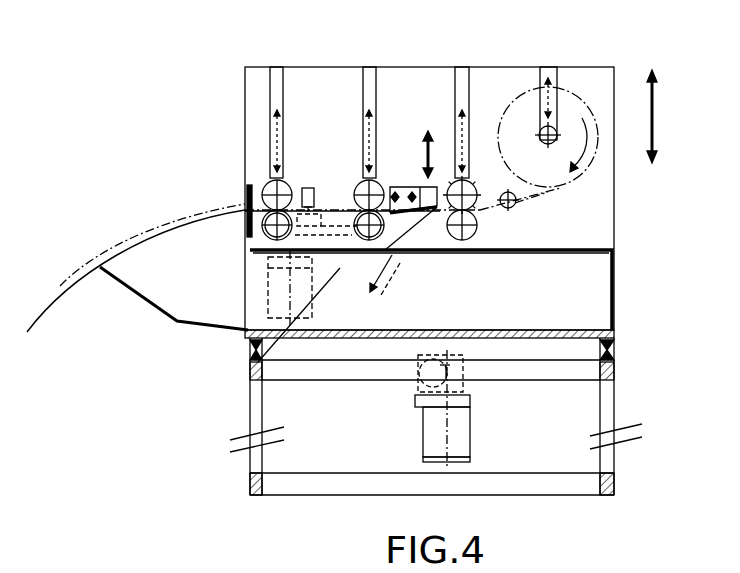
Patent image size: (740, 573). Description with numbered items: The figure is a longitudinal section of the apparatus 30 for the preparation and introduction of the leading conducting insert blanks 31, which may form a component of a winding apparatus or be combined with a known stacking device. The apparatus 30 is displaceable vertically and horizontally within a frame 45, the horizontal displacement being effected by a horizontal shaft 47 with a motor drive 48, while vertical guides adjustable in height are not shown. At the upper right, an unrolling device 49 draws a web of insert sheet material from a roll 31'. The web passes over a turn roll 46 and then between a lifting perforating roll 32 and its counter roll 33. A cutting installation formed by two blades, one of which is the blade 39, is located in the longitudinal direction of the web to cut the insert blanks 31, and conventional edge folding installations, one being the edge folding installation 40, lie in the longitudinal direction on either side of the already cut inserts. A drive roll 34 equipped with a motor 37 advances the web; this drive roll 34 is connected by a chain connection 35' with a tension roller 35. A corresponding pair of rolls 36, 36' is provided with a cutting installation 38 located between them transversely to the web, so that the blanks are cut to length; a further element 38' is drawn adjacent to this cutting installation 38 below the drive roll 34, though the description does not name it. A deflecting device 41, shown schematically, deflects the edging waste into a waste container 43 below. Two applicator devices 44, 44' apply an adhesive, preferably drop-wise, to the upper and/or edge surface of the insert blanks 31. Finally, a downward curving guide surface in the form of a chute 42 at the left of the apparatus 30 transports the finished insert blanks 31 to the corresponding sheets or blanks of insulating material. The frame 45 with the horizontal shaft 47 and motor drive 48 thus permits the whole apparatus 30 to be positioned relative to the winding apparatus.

The apparatus 30 is at (82, 470).
The insert blank 31 is at (125, 251).
The roll 31' is at (542, 96).
The lifting perforating roll 32 is at (455, 178).
The counter roll 33 is at (470, 232).
The drive roll 34 is at (262, 233).
The tension roller 35 is at (263, 341).
The chain connection 35' is at (285, 291).
The roll of pair of rolls 36 is at (255, 107).
The roll of pair of rolls 36' is at (345, 107).
The motor 37 is at (283, 290).
The cutting installation 38 is at (291, 108).
The guide element 38' is at (270, 252).
The blade 39 is at (425, 187).
The edge folding installation 40 is at (400, 188).
The deflecting device 41 is at (465, 250).
The chute 42 is at (130, 240).
The waste container 43 is at (588, 315).
The applicator device 44 is at (290, 108).
The applicator device 44' is at (170, 121).
The frame 45 is at (250, 488).
The turn roll 46 is at (508, 202).
The horizontal shaft 47 is at (432, 376).
The motor drive 48 is at (457, 427).
The unrolling device 49 is at (555, 100).